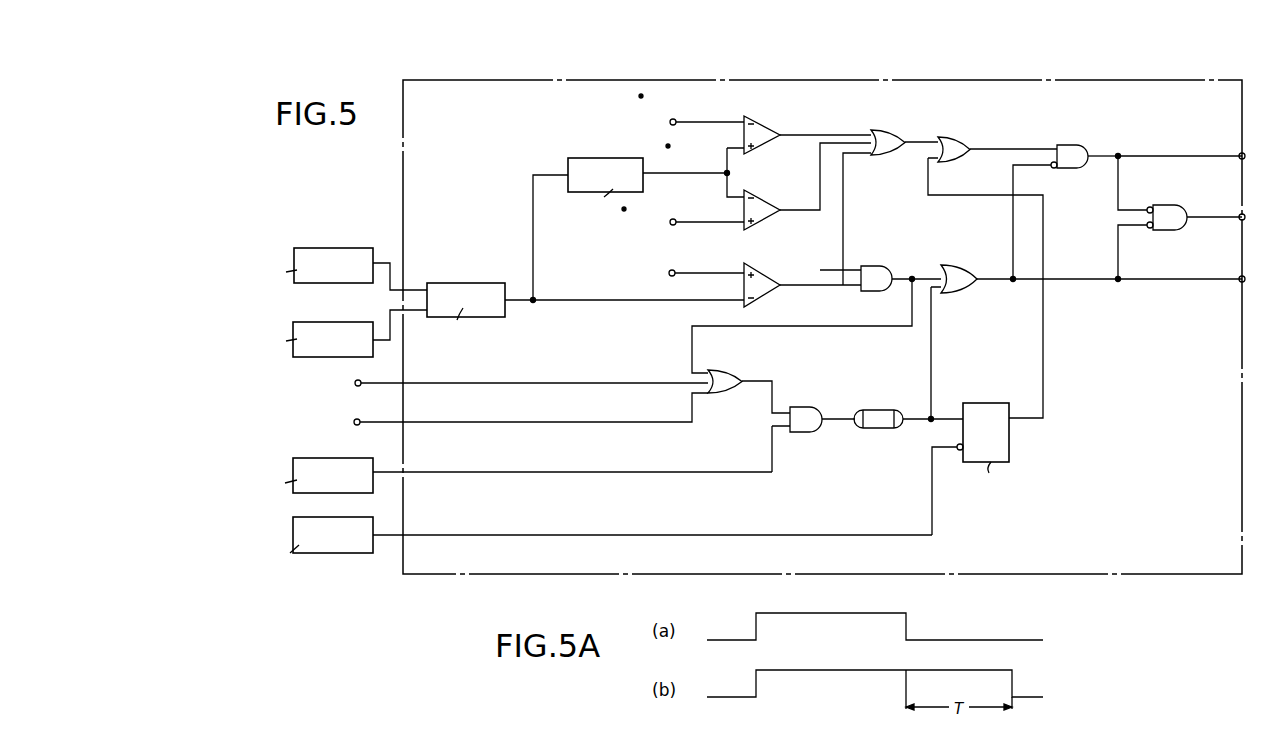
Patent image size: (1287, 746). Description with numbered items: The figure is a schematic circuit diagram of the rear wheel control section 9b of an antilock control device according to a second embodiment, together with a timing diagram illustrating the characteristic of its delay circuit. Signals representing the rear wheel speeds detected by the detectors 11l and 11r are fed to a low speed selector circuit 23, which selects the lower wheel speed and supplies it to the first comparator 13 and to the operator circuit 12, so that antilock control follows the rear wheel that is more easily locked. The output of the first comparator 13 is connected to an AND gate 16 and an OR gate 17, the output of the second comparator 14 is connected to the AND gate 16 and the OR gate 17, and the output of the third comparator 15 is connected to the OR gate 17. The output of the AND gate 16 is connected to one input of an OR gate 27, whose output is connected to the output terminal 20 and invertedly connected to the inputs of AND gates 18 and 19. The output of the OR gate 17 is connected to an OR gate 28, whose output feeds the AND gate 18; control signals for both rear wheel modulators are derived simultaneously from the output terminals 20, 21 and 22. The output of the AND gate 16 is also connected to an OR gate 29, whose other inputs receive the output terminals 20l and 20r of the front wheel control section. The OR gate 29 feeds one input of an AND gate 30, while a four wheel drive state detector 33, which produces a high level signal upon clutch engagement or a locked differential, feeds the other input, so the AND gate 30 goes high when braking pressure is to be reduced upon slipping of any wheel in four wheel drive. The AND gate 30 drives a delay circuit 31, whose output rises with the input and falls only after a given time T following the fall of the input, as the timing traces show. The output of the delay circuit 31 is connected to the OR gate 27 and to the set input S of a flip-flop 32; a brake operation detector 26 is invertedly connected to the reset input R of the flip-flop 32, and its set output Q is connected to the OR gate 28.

The rear wheel control section 9b is at (1012, 80).
The detector 11r is at (326, 248).
The detector 11l is at (327, 322).
The operator circuit 12 is at (595, 165).
The first comparator 13 is at (766, 276).
The second comparator 14 is at (763, 198).
The third comparator 15 is at (766, 130).
The AND gate 16 is at (871, 268).
The OR gate 17 is at (878, 136).
The AND gate 18 is at (1063, 147).
The AND gate 19 is at (1165, 208).
The output terminal 20 is at (1245, 279).
The output terminal 20r is at (355, 384).
The output terminal 20l is at (354, 422).
The output terminal 21 is at (1245, 217).
The output terminal 22 is at (1245, 156).
The low speed selector circuit 23 is at (458, 291).
The brake operation detector 26 is at (328, 553).
The OR gate 27 is at (958, 271).
The OR gate 28 is at (953, 141).
The OR gate 29 is at (718, 372).
The AND gate 30 is at (805, 410).
The delay circuit 31 is at (876, 420).
The flip-flop 32 is at (1003, 441).
The four wheel drive state detector 33 is at (335, 463).